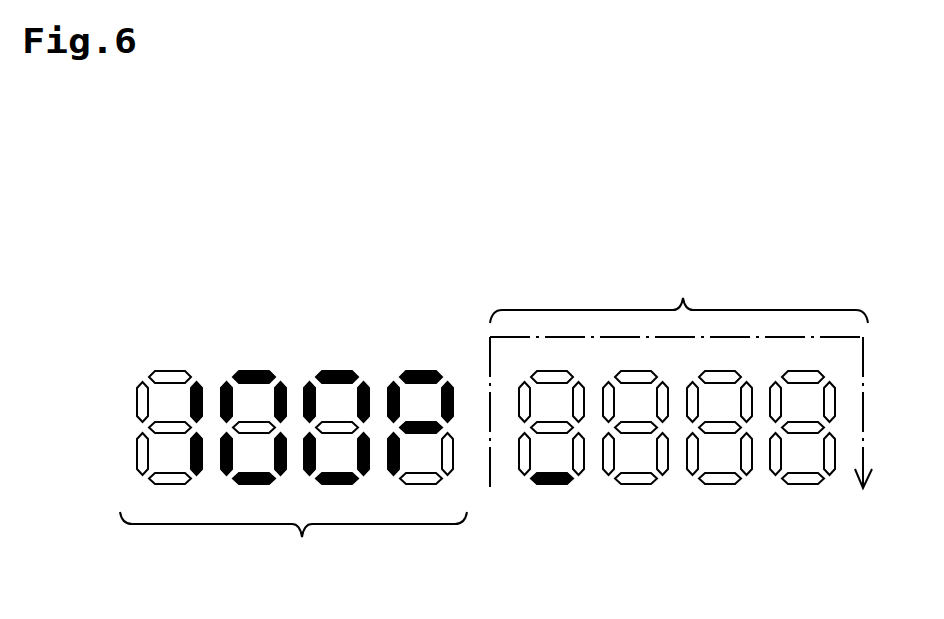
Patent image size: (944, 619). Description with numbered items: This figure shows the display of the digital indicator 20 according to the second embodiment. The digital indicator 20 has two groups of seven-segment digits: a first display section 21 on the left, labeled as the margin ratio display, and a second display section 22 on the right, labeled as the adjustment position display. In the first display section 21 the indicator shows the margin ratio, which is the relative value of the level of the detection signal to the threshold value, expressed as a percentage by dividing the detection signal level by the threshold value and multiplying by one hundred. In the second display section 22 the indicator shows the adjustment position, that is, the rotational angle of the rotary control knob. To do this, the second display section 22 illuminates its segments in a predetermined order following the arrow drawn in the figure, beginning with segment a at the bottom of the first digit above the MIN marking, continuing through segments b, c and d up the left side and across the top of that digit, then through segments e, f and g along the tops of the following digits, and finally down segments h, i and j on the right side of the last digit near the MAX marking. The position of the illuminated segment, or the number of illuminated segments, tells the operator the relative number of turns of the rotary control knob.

The digital indicator 20 is at (445, 215).
The first display section 21 is at (318, 352).
The second display section 22 is at (710, 523).
The segment a is at (561, 487).
The segment b is at (512, 454).
The segment c is at (512, 402).
The segment d is at (560, 364).
The segment e is at (642, 364).
The segment f is at (724, 364).
The segment g is at (808, 364).
The segment h is at (841, 401).
The segment i is at (838, 453).
The segment j is at (815, 480).